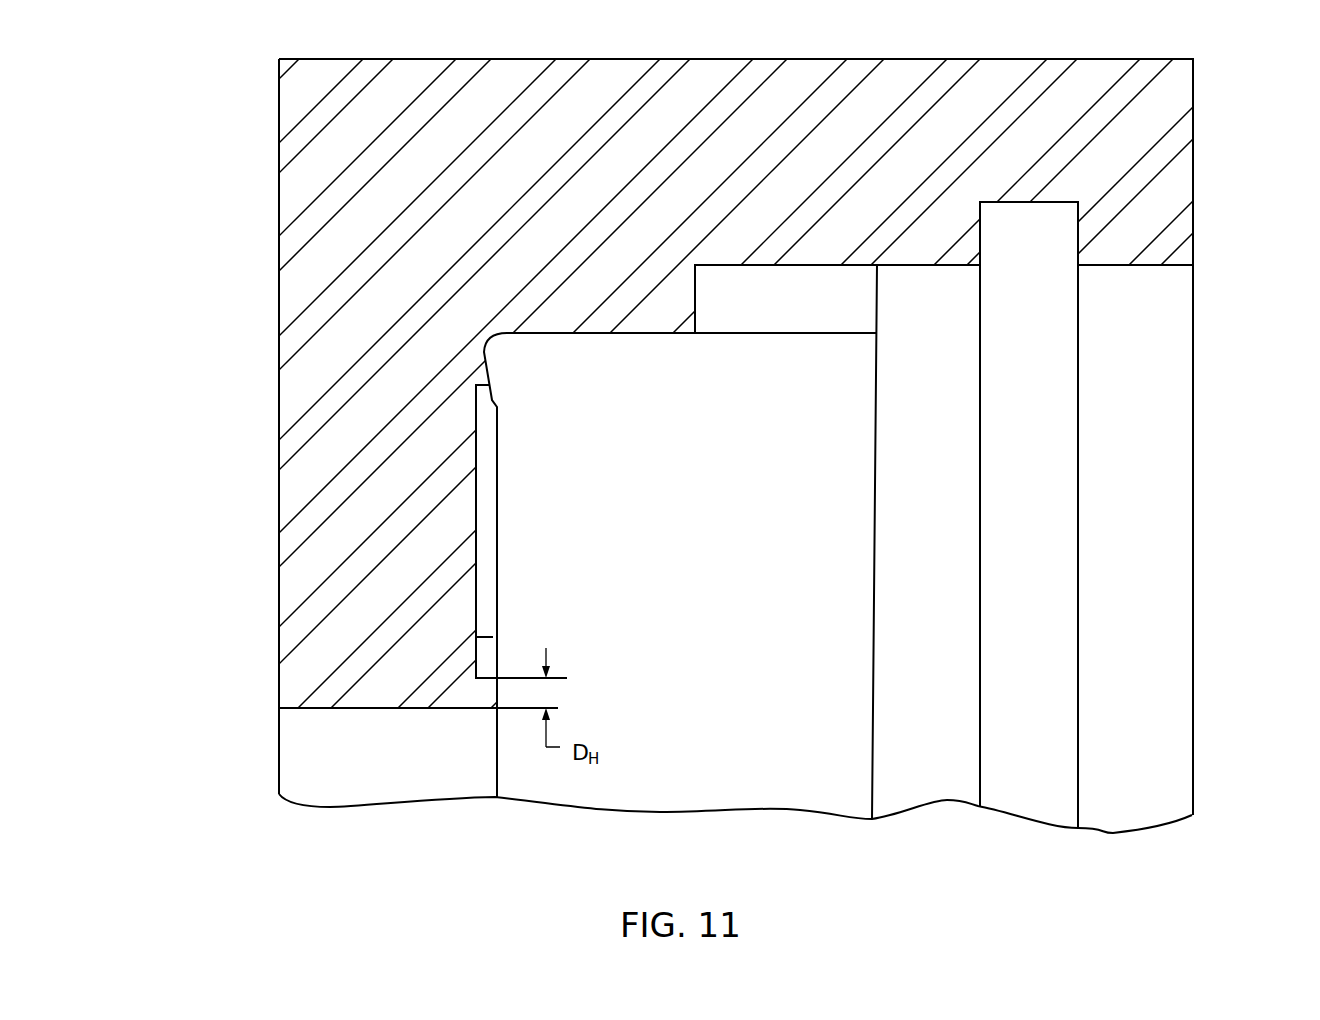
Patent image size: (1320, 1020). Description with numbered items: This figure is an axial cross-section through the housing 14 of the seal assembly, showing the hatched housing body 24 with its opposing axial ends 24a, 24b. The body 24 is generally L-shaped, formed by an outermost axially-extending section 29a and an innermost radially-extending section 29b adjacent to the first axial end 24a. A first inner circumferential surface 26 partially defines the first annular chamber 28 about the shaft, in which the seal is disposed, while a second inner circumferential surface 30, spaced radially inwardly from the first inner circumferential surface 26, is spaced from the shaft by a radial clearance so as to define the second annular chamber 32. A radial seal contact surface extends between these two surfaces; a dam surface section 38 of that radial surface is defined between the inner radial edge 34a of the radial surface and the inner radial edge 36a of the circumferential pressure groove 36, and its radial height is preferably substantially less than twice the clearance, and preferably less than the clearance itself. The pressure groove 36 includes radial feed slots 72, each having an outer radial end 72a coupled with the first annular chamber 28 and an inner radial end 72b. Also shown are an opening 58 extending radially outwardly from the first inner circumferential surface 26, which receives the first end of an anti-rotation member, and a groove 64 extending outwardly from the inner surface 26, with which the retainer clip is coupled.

The housing 14 is at (216, 96).
The generally annular body 24 is at (274, 185).
The first axial end 24a is at (279, 290).
The second axial end 24b is at (1195, 164).
The first inner circumferential surface 26 is at (652, 333).
The first annular chamber 28 is at (612, 382).
The outermost axially-extending section 29a is at (698, 90).
The innermost radially-extending section 29b is at (304, 515).
The second inner circumferential surface 30 is at (377, 708).
The second annular chamber 32 is at (323, 747).
The inner radial edge 34a is at (497, 710).
The pressure groove 36 is at (492, 658).
The inner radial edge of the pressure groove 36a is at (498, 678).
The dam surface section 38 is at (497, 693).
The housing opening 58 is at (696, 305).
The groove 64 is at (1078, 232).
The radial feed slot 72 is at (497, 511).
The outer radial end 72a is at (488, 398).
The inner radial end 72b is at (488, 636).